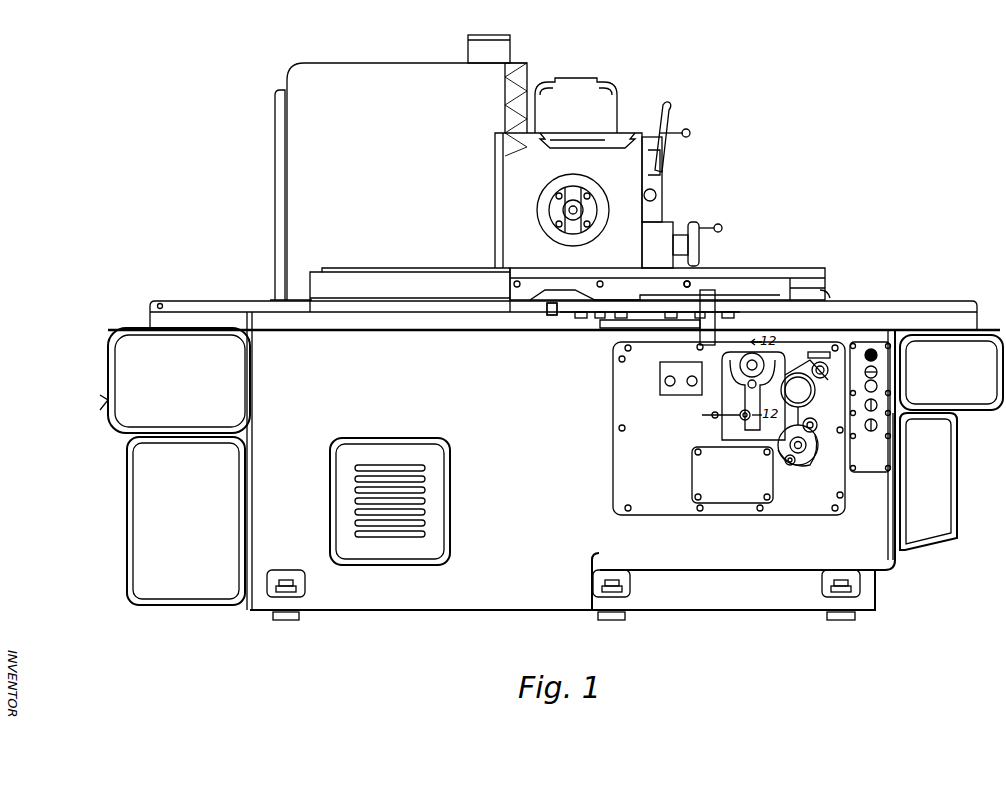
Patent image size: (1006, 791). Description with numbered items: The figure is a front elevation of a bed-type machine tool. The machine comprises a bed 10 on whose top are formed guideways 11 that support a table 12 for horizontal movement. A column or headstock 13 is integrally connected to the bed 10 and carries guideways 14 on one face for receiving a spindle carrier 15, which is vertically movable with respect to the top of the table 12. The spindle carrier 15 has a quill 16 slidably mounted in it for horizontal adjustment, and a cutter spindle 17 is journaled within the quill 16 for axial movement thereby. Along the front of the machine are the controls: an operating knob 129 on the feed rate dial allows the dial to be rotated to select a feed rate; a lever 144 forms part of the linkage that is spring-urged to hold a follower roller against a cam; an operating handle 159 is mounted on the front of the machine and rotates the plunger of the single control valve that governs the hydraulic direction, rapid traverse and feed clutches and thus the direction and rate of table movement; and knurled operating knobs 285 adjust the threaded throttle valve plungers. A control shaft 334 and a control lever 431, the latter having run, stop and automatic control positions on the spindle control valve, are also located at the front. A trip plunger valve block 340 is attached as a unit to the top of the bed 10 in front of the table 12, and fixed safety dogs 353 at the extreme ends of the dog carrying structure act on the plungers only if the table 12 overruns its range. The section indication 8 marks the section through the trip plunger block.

The bed 10 is at (285, 380).
The guideways 11 is at (890, 310).
The table 12 is at (782, 268).
The column 13 is at (320, 92).
The guideways 14 is at (530, 62).
The spindle carrier 15 is at (623, 153).
The quill 16 is at (550, 232).
The cutter spindle 17 is at (562, 212).
The section indicator 8 is at (696, 418).
The operating knob 129 is at (815, 450).
The lever 144 is at (790, 470).
The operating handle 159 is at (757, 400).
The knurled operating knobs 285 is at (668, 383).
The control shaft 334 is at (845, 373).
The trip plunger valve block 340 is at (648, 330).
The fixed safety dogs 353 is at (553, 318).
The control lever 431 is at (735, 455).